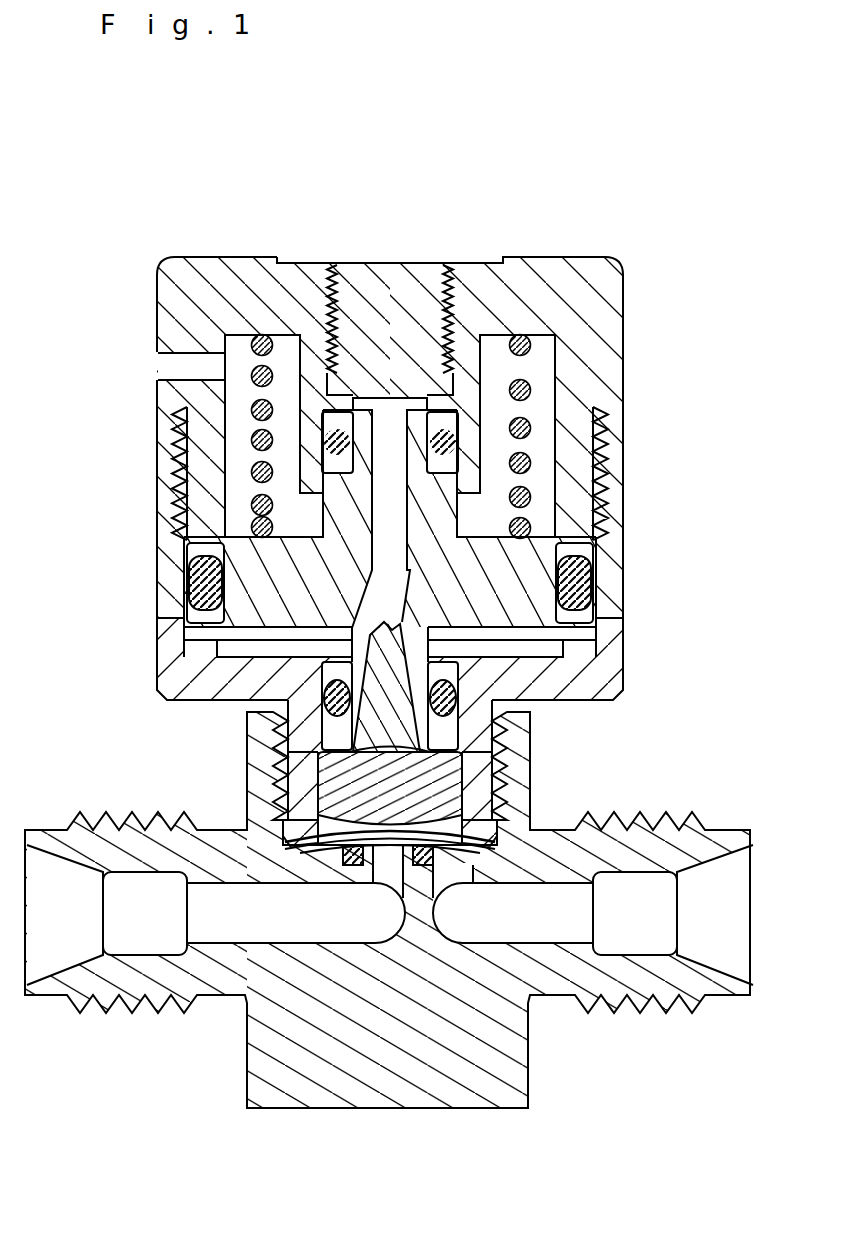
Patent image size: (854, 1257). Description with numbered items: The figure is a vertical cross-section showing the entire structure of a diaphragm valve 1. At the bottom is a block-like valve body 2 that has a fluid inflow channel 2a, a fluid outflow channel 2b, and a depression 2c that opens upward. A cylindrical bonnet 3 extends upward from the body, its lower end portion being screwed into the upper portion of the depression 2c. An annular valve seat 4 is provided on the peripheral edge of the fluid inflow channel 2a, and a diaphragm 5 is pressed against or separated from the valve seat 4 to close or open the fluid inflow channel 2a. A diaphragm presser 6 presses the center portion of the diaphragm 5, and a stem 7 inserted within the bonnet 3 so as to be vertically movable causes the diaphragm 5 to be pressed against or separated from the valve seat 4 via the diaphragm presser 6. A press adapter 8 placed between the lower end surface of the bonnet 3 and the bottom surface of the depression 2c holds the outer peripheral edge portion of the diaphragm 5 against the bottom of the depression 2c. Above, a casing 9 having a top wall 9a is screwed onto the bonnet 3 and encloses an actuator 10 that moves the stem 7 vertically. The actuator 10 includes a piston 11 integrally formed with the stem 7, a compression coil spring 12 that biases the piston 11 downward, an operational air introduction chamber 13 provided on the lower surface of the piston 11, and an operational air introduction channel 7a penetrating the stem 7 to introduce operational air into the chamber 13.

The diaphragm valve 1 is at (389, 675).
The valve body 2 is at (389, 910).
The fluid inflow channel 2a is at (222, 944).
The fluid outflow channel 2b is at (545, 942).
The depression 2c is at (493, 785).
The bonnet 3 is at (623, 690).
The valve seat 4 is at (353, 862).
The diaphragm 5 is at (332, 803).
The diaphragm presser 6 is at (462, 770).
The stem 7 is at (517, 473).
The operational air introduction channel 7a is at (396, 395).
The press adapter 8 is at (315, 820).
The casing 9 is at (423, 447).
The top wall 9a is at (243, 278).
The actuator 10 is at (545, 530).
The piston 11 is at (257, 606).
The compression coil spring 12 is at (252, 441).
The operational air introduction chamber 13 is at (272, 635).